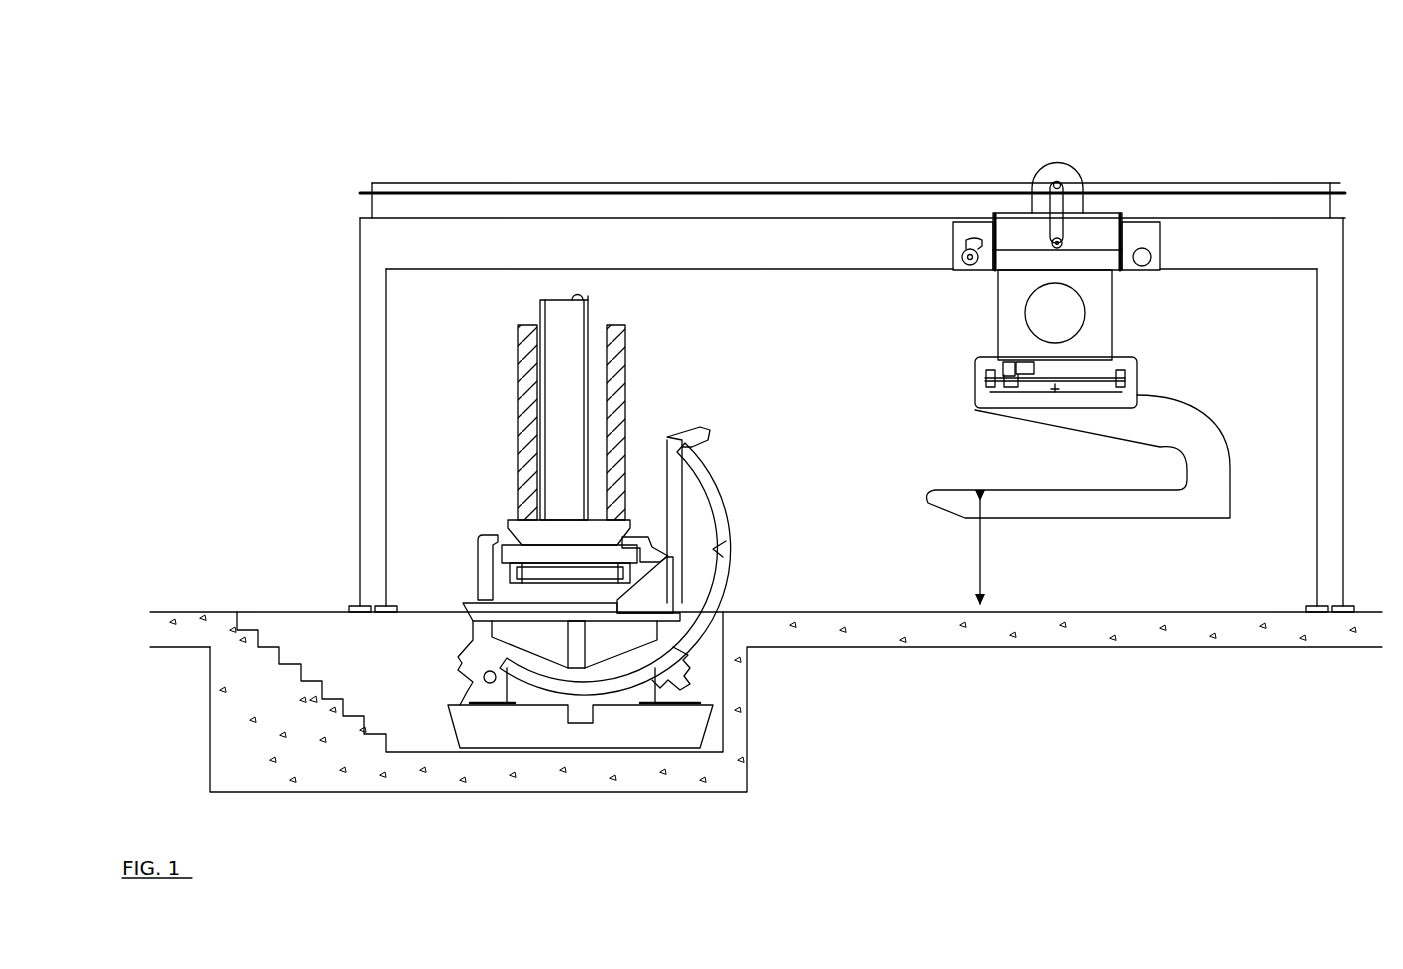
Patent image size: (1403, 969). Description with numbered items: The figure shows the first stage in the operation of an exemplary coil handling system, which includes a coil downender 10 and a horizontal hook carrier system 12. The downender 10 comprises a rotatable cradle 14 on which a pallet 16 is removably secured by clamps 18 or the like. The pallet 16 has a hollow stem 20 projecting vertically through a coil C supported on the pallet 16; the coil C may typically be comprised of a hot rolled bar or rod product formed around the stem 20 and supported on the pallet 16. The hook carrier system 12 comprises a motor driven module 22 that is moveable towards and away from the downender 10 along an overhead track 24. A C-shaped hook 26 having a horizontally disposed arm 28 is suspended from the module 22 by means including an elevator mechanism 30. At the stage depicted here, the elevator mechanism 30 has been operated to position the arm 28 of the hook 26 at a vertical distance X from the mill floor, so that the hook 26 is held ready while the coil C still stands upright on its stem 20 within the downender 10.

The coil downender 10 is at (615, 514).
The horizontal hook carrier system 12 is at (803, 167).
The rotatable cradle 14 is at (720, 585).
The pallet 16 is at (545, 553).
The clamps 18 is at (483, 565).
The hollow stem 20 is at (570, 318).
The motor driven module 22 is at (1090, 228).
The overhead track 24 is at (798, 246).
The C-shaped hook 26 is at (1195, 423).
The horizontally disposed arm 28 is at (1090, 507).
The elevator mechanism 30 is at (1100, 327).
The coil C is at (530, 402).
The vertical distance X is at (1000, 552).